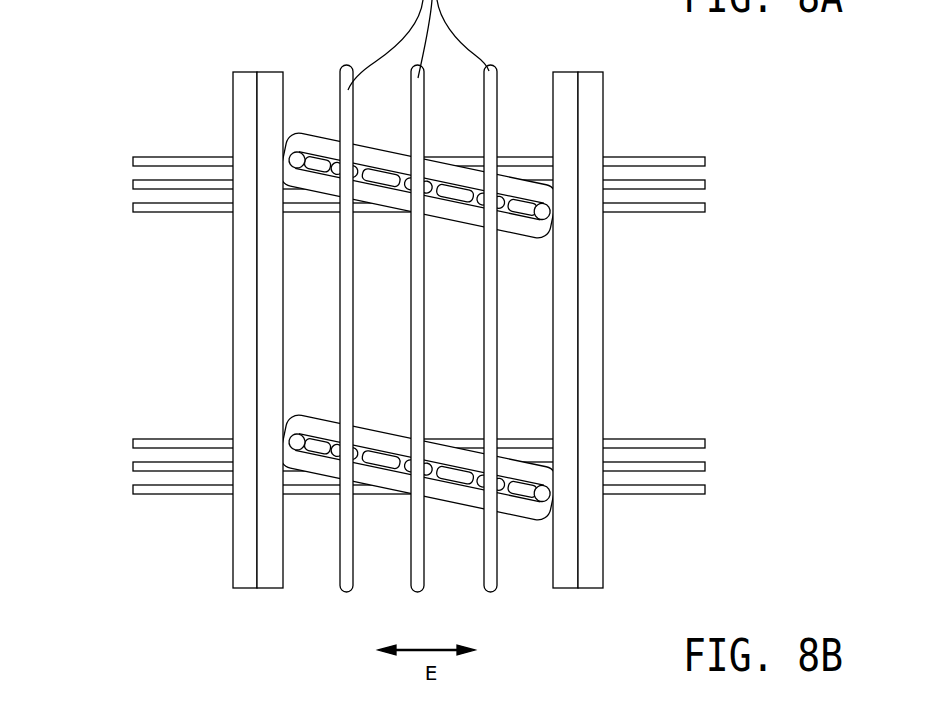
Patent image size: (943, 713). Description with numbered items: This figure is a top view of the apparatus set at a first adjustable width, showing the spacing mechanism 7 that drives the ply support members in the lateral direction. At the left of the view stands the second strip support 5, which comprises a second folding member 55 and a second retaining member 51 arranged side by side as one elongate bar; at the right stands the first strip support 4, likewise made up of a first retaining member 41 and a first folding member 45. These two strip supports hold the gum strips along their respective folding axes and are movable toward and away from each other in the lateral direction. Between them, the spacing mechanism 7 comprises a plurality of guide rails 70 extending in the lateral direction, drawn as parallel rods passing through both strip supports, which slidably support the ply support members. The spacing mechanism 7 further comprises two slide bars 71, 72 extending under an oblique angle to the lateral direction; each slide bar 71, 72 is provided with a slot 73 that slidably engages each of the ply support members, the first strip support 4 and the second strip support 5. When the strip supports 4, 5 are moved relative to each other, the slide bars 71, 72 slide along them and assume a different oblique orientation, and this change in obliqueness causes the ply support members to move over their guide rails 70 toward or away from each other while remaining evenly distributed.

The spacing mechanism 7 is at (379, 296).
The second strip support 5 is at (236, 294).
The second folding member 55 is at (243, 85).
The second retaining member 51 is at (273, 78).
The first strip support 4 is at (619, 294).
The first retaining member 41 is at (562, 80).
The first folding member 45 is at (595, 92).
The guide rails 70 is at (133, 207).
The slide bar 71 is at (385, 480).
The slide bar 72 is at (385, 198).
The slot 73 is at (447, 172).